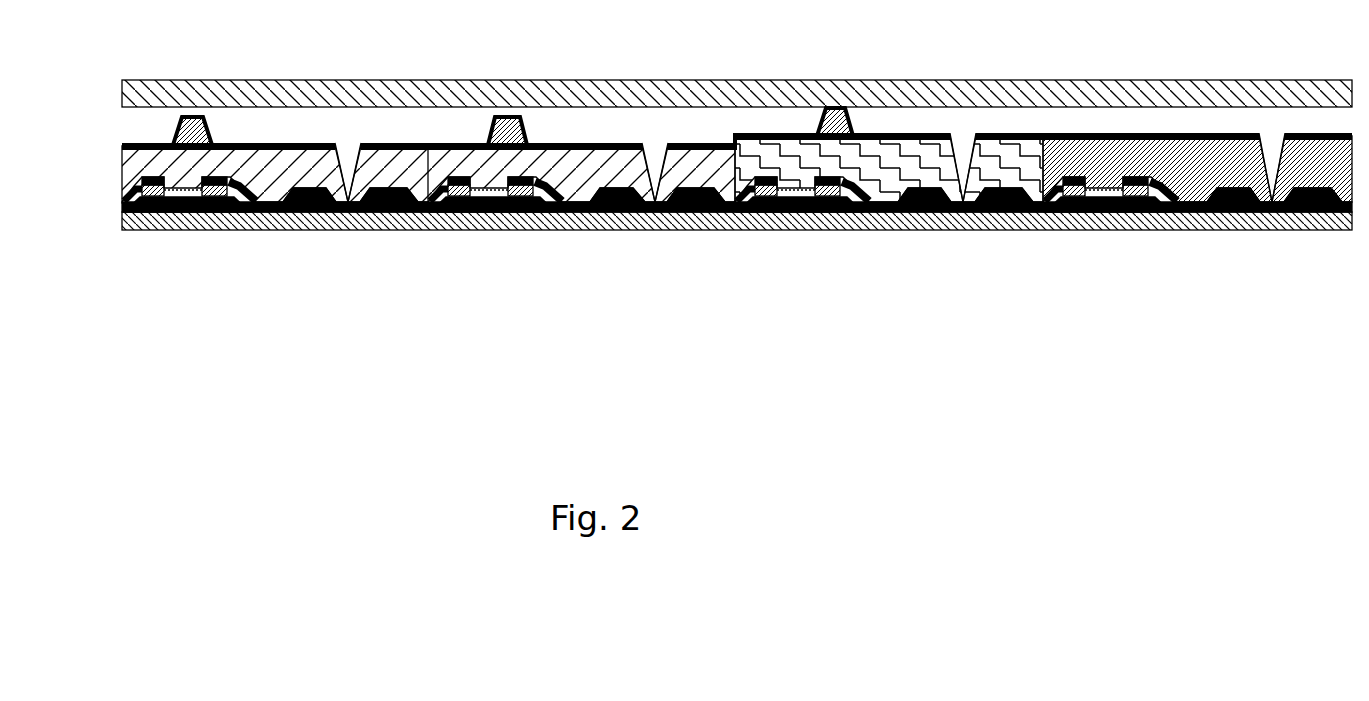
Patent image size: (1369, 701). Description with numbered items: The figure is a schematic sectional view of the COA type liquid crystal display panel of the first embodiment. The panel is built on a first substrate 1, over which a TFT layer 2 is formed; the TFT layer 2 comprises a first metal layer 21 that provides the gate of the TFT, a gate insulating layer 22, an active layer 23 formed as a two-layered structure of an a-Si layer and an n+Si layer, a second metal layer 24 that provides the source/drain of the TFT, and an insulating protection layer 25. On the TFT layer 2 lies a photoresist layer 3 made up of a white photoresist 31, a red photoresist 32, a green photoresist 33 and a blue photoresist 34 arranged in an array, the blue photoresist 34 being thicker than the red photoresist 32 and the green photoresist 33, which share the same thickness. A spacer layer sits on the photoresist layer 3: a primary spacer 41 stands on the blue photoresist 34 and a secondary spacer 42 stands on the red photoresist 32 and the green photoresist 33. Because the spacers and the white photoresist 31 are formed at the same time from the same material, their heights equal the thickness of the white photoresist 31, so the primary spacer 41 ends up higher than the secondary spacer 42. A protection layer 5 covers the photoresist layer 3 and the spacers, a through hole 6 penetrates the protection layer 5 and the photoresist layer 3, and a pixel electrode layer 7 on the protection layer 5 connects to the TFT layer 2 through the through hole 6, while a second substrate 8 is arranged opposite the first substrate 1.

The first substrate 1 is at (1233, 229).
The TFT layer 2 is at (610, 215).
The first metal layer 21 is at (135, 225).
The gate insulating layer 22 is at (132, 213).
The active layer 23 is at (128, 201).
The second metal layer 24 is at (124, 196).
The insulating protection layer 25 is at (627, 187).
The photoresist layer 3 is at (737, 265).
The white photoresist 31 is at (1043, 195).
The red photoresist 32 is at (810, 234).
The green photoresist 33 is at (548, 162).
The blue photoresist 34 is at (850, 160).
The primary spacer 41 is at (835, 108).
The secondary spacer 42 is at (210, 128).
The protection layer 5 is at (150, 143).
The through hole 6 is at (1297, 226).
The pixel electrode layer 7 is at (1293, 133).
The second substrate 8 is at (1075, 97).